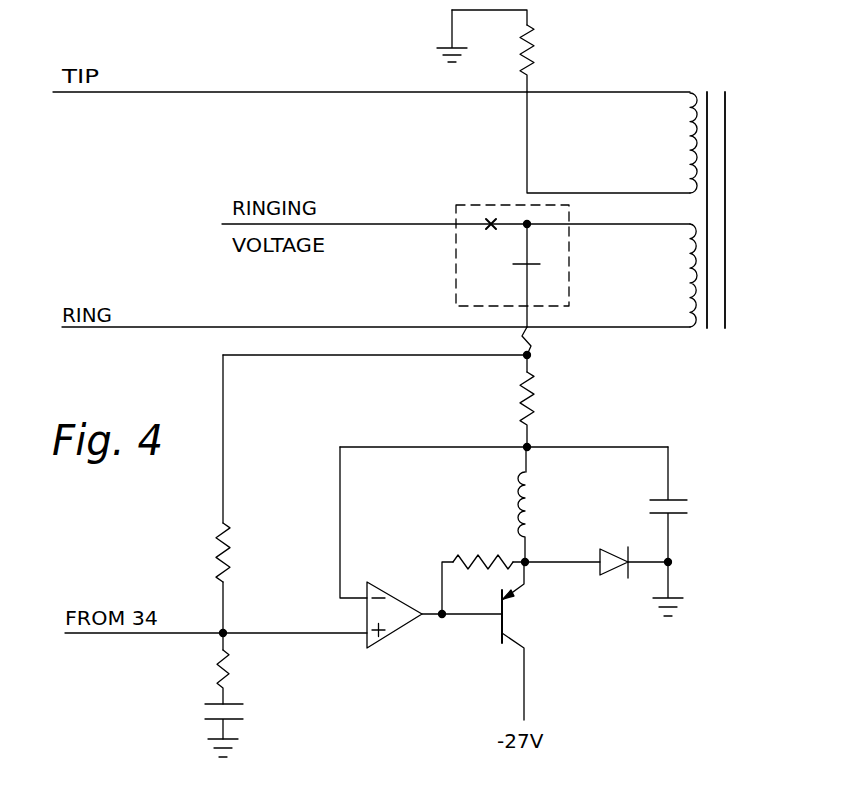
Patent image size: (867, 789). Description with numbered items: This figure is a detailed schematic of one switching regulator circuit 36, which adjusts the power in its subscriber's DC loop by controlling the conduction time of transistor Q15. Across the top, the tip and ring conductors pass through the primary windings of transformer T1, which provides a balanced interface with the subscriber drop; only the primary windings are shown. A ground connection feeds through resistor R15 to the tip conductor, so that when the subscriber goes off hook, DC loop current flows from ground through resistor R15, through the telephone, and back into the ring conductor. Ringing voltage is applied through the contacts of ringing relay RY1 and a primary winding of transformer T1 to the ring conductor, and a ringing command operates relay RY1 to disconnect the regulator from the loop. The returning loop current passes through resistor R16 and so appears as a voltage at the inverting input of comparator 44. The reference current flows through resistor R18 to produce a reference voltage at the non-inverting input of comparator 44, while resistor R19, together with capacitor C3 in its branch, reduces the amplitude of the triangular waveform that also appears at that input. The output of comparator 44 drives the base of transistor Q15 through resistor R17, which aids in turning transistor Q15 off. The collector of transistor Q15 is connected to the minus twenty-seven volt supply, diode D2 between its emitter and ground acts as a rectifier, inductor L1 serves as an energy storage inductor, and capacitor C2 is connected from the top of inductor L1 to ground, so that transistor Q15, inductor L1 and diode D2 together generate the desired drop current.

The switching regulator circuit 36 is at (258, 41).
The resistor R15 is at (505, 51).
The transformer T1 is at (711, 197).
The ringing relay RY1 is at (510, 241).
The resistor R16 is at (547, 401).
The inductor L1 is at (540, 504).
The capacitor C2 is at (684, 531).
The resistor R17 is at (483, 544).
The diode D2 is at (616, 580).
The transistor Q15 is at (524, 641).
The comparator 44 is at (403, 628).
The resistor R18 is at (202, 552).
The resistor R19 is at (204, 677).
The capacitor C3 is at (206, 725).